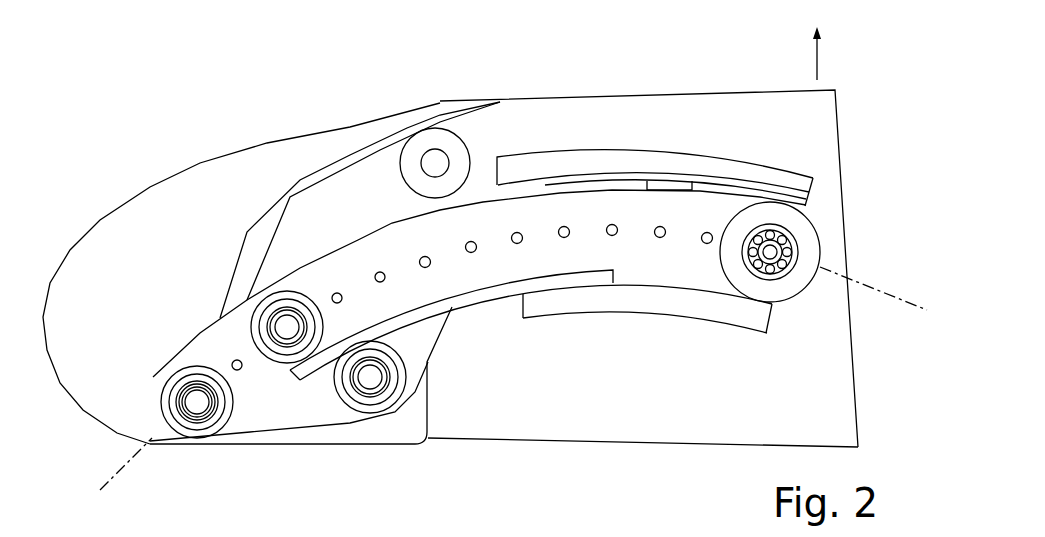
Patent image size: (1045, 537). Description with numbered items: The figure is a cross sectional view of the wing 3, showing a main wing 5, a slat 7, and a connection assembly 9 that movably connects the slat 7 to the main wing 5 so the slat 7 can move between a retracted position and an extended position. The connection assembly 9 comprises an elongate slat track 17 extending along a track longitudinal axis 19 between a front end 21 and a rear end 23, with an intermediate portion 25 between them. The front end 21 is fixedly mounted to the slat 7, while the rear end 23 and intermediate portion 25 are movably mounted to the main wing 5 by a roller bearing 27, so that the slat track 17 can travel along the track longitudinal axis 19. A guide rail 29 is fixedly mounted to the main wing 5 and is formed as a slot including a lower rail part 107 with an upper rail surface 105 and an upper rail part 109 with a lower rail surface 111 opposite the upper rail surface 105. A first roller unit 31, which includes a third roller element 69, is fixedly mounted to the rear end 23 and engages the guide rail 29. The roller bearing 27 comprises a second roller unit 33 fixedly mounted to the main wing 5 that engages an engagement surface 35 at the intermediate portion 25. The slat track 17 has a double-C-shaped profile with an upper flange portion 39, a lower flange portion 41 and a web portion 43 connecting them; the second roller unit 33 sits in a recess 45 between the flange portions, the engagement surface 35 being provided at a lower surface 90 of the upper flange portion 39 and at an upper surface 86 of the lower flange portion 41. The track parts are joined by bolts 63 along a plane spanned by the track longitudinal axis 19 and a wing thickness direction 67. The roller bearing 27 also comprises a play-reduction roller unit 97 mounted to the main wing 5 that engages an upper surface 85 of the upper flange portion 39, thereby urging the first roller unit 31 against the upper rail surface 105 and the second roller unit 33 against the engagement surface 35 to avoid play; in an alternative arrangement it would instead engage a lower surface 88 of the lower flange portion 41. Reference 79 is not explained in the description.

The wing 3 is at (108, 152).
The main wing 5 is at (727, 386).
The slat 7 is at (116, 312).
The connection assembly 9 is at (523, 120).
The slat track 17 is at (443, 220).
The track longitudinal axis 19 is at (915, 304).
The front end 21 is at (288, 417).
The rear end 23 is at (740, 200).
The intermediate portion 25 is at (494, 283).
The roller bearing 27 is at (529, 232).
The guide rail 29 is at (698, 163).
The first roller unit 31 is at (793, 285).
The second roller unit 33 is at (288, 292).
The engagement surface 35 is at (487, 203).
The upper flange portion 39 is at (412, 322).
The lower flange portion 41 is at (556, 278).
The web portion 43 is at (533, 253).
The recess 45 is at (590, 256).
The bolts 63 is at (355, 322).
The wing thickness direction 67 is at (820, 57).
The third roller element 69 is at (810, 238).
The stop edge 79 is at (779, 328).
The upper surface 85 is at (387, 223).
The upper surface 86 is at (380, 272).
The lower surface 88 is at (440, 338).
The lower surface 90 is at (353, 390).
The play-reduction roller unit 97 is at (443, 147).
The upper rail surface 105 is at (633, 283).
The lower rail part 107 is at (692, 316).
The upper rail part 109 is at (612, 160).
The lower rail surface 111 is at (722, 200).